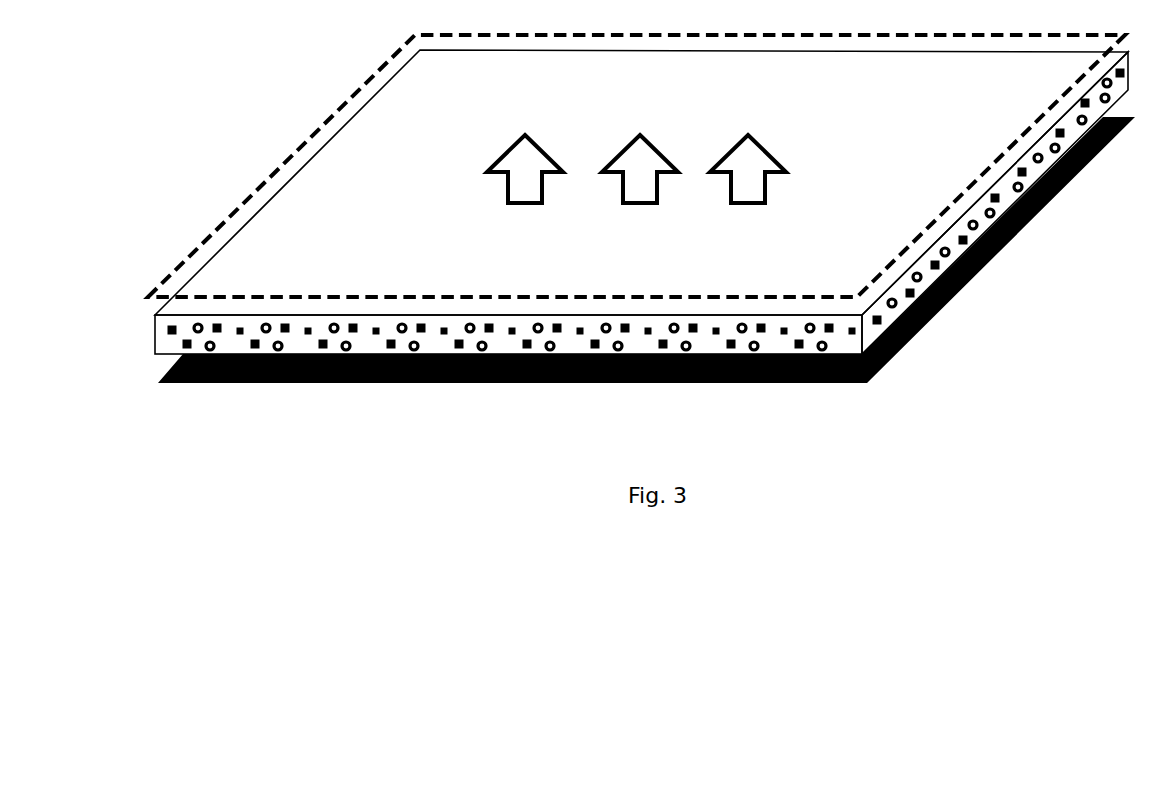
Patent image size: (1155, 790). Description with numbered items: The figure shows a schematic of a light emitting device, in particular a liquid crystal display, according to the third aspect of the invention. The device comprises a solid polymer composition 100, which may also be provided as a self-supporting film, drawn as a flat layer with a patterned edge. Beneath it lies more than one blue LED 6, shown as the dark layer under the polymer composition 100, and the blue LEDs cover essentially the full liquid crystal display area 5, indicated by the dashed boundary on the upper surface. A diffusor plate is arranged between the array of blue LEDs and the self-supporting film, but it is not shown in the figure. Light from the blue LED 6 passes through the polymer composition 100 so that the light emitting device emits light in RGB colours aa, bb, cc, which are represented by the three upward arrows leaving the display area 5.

The liquid crystal display area 5 is at (322, 118).
The blue LED 6 is at (507, 384).
The solid polymer composition 100 is at (153, 360).
The RGB colour emission aa is at (519, 128).
The RGB colour emission bb is at (652, 128).
The RGB colour emission cc is at (770, 130).